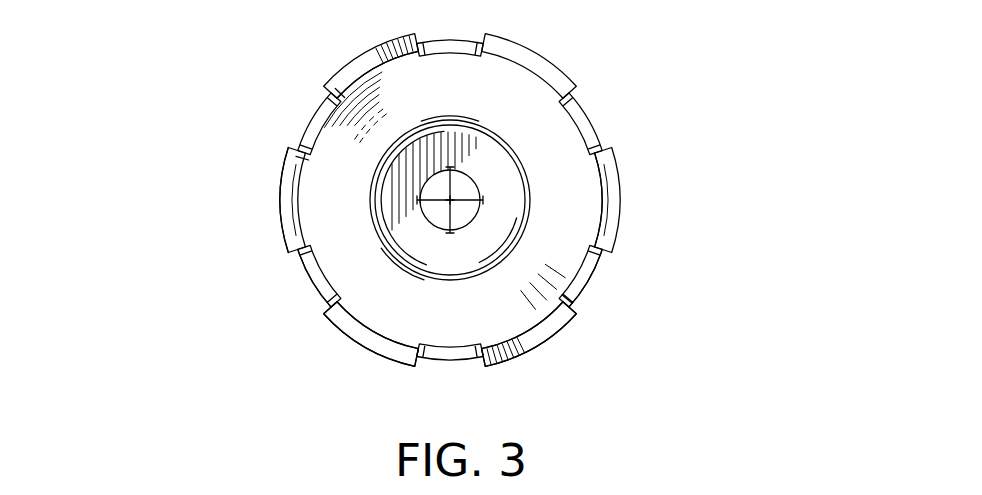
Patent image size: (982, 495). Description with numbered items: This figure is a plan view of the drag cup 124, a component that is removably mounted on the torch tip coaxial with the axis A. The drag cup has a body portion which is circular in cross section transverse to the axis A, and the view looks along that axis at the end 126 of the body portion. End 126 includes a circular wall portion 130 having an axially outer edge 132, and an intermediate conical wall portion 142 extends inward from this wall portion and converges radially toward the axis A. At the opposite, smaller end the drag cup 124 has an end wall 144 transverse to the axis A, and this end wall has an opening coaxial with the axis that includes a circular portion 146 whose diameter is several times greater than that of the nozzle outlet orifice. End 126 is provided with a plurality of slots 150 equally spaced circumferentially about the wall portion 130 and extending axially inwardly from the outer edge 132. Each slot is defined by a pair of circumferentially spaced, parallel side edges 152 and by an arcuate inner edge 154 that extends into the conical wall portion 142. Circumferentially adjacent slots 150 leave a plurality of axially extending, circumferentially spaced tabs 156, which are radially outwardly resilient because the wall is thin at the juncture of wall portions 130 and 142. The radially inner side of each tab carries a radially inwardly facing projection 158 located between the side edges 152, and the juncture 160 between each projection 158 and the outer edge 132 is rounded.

The drag cup 124 is at (172, 165).
The end of body portion 126 is at (620, 205).
The circular wall portion 130 is at (279, 200).
The axially outer edge 132 is at (288, 225).
The conical wall portion 142 is at (523, 310).
The end wall 144 is at (503, 190).
The circular portion of opening 146 is at (458, 181).
The slots 150 is at (304, 272).
The side edges 152 is at (326, 90).
The arcuate inner edge 154 is at (322, 289).
The tabs 156 is at (500, 336).
The projection 158 is at (587, 192).
The juncture 160 is at (383, 62).
The axis A is at (450, 200).